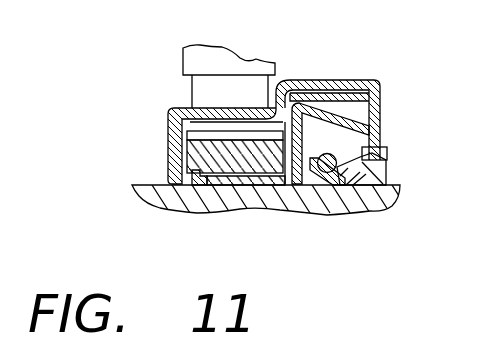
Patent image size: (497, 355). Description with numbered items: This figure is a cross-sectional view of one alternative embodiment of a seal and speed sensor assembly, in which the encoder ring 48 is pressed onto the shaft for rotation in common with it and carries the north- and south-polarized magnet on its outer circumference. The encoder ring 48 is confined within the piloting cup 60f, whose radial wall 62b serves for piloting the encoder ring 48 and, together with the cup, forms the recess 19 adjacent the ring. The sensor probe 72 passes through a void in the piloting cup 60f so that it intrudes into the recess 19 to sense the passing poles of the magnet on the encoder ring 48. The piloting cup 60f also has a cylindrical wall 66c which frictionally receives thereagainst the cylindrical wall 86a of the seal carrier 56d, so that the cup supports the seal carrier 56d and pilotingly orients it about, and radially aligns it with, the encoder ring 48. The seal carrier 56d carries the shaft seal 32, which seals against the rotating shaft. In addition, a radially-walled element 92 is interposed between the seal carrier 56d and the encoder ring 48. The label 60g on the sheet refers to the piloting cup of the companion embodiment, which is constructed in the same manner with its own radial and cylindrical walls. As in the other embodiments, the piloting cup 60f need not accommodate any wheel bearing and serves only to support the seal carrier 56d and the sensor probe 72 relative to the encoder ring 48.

The sensor probe 72 is at (197, 62).
The cylindrical wall 66c is at (298, 80).
The piloting cup 60f is at (172, 112).
The radial wall 62b is at (168, 162).
The recess 19 is at (168, 139).
The encoder ring 48 is at (205, 173).
The cylindrical wall 86a is at (375, 111).
The seal carrier 56d is at (381, 142).
The radially-walled element 92 is at (312, 172).
The shaft seal 32 is at (392, 182).
The piloting cup 60g is at (470, 329).